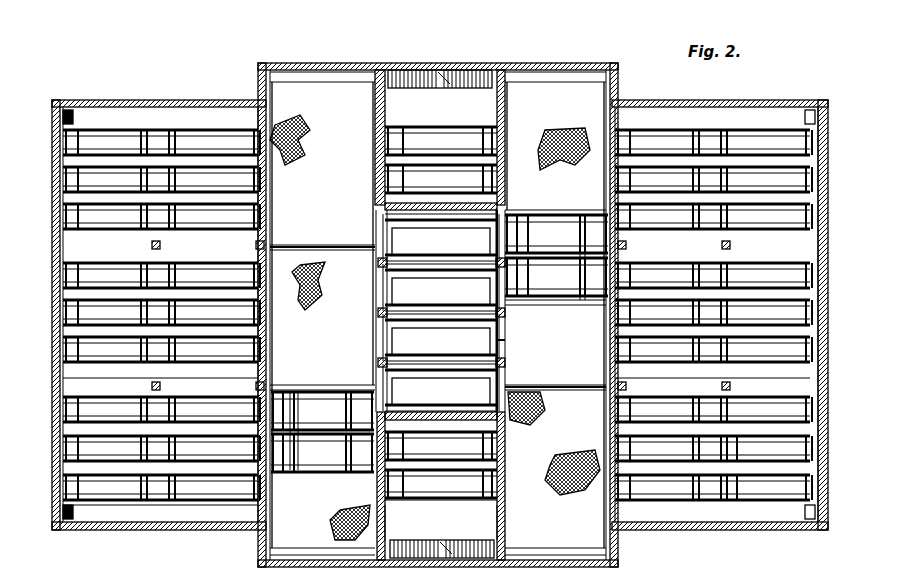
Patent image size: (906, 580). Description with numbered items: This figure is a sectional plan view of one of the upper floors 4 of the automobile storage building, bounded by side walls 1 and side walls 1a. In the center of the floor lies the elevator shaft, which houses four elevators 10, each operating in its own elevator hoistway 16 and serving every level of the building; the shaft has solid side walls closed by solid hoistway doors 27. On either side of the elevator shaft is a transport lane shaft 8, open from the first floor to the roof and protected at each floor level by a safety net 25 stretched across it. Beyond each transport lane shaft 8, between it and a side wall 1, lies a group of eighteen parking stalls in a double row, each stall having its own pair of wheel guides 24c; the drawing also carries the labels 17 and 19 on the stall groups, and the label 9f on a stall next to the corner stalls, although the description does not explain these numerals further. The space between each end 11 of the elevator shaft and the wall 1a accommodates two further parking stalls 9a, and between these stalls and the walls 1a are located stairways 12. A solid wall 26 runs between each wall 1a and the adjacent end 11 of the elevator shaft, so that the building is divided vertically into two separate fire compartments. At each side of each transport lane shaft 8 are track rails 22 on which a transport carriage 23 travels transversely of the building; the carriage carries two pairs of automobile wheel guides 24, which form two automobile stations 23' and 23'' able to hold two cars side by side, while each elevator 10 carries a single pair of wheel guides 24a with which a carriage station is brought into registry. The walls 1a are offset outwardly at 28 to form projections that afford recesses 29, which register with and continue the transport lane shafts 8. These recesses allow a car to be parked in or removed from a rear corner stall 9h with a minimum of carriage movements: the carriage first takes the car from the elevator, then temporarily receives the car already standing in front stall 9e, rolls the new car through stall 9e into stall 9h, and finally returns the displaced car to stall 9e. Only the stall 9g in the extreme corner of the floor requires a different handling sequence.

The side wall 1 is at (58, 322).
The side wall 1a is at (150, 100).
The upper floor 4 is at (103, 530).
The transport lane shaft 8 is at (435, 327).
The parking stall 9a is at (448, 135).
The front stall 9e is at (713, 448).
The shelf compartment 9f is at (713, 487).
The corner stall 9g is at (757, 487).
The rear corner stall 9h is at (757, 448).
The elevator 10 is at (440, 311).
The end of elevator shaft 11 is at (505, 200).
The stairway 12 is at (398, 70).
The elevator hoistway 16 is at (385, 287).
The storage shelf 17 is at (68, 458).
The storage shelf 19 is at (100, 215).
The track rail 22 is at (375, 155).
The transport carriage 23 is at (439, 351).
The automobile station 23' is at (460, 397).
The automobile station 23'' is at (412, 325).
The automobile wheel guide 24 is at (298, 420).
The wheel guide 24a is at (500, 342).
The wheel guide 24c is at (117, 355).
The safety net 25 is at (292, 110).
The solid wall 26 is at (378, 122).
The hoistway door 27 is at (372, 245).
The offset 28 is at (263, 63).
The recess 29 is at (328, 70).